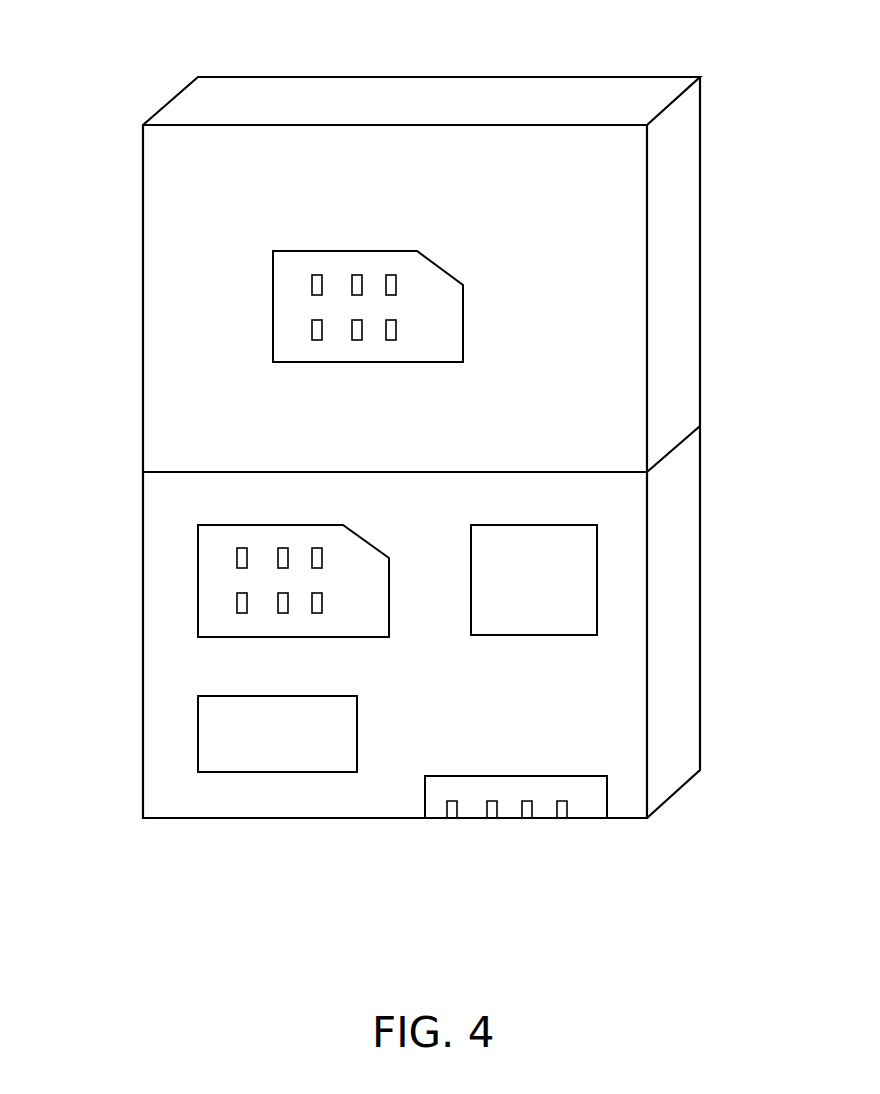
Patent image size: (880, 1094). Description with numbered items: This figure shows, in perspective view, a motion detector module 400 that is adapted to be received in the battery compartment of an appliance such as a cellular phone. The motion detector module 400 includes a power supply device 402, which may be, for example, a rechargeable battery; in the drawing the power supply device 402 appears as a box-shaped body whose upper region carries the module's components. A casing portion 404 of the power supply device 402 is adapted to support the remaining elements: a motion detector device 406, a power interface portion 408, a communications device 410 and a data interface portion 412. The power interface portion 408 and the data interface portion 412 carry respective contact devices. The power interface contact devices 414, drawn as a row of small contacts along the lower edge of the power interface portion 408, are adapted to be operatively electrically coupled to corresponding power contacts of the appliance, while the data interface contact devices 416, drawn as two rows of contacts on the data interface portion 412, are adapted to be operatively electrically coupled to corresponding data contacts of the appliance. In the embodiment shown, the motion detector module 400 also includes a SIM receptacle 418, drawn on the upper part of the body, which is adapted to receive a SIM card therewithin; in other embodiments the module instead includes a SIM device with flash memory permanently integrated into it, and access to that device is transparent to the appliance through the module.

The motion detector module 400 is at (422, 459).
The power supply device 402 is at (160, 305).
The casing portion 404 is at (690, 589).
The motion detector device 406 is at (507, 623).
The power interface portion 408 is at (516, 817).
The communications device 410 is at (283, 757).
The data interface portion 412 is at (215, 564).
The power interface contact devices 414 is at (453, 818).
The data interface contact devices 416 is at (245, 550).
The SIM receptacle 418 is at (352, 258).